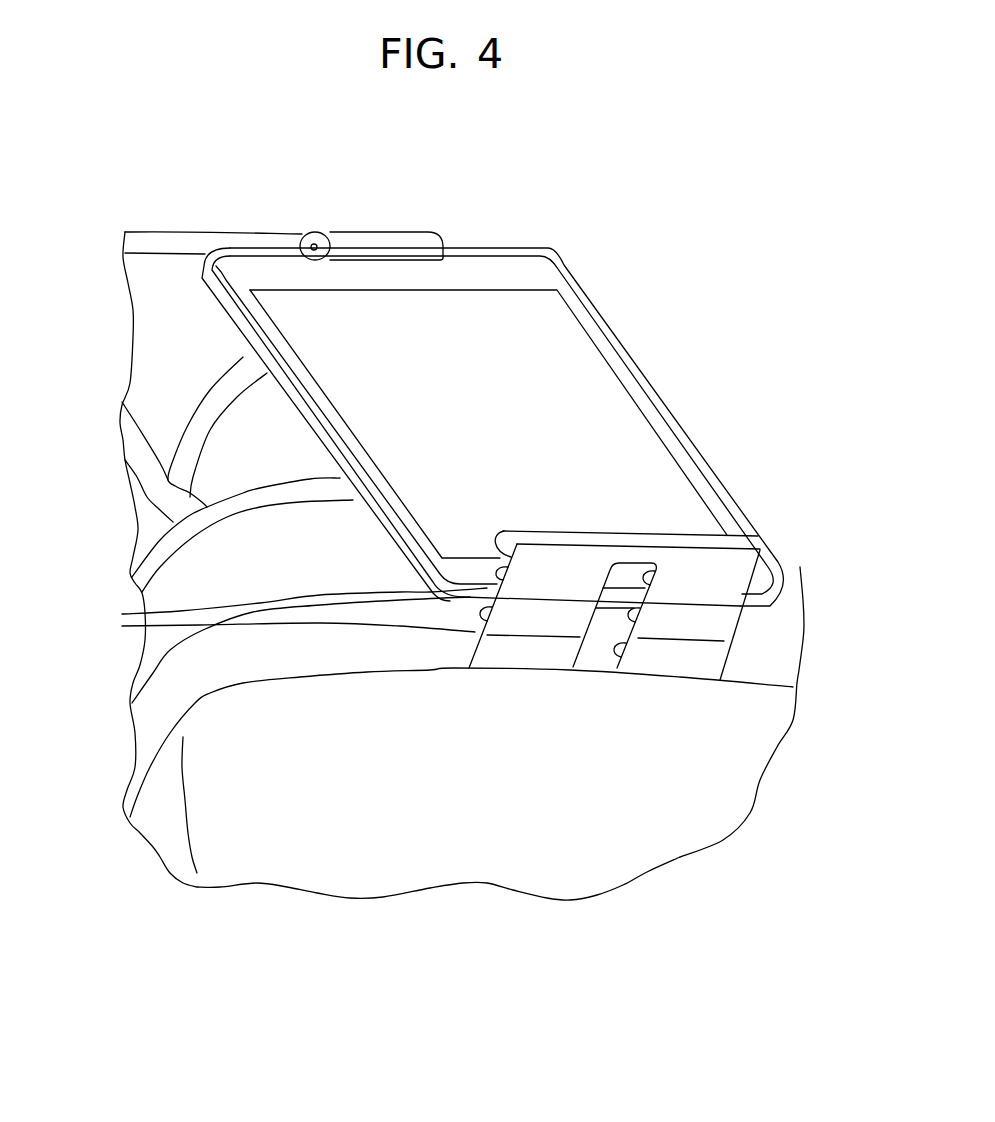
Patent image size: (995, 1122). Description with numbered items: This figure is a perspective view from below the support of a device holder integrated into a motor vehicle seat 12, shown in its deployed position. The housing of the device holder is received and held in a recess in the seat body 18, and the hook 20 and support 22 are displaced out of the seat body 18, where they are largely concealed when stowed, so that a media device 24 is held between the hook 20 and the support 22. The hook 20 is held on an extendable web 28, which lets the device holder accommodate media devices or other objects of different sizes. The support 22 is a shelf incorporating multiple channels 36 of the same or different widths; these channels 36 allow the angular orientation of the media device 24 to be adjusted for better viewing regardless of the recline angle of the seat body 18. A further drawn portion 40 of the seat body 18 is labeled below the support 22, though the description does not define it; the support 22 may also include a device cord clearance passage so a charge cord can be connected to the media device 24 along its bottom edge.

The motor vehicle seat 12 is at (175, 670).
The seat body 18 is at (223, 843).
The hook 20 is at (392, 242).
The support 22 is at (697, 540).
The media device 24 is at (597, 367).
The extendable web 28 is at (597, 645).
The channels 36 is at (493, 528).
The fold portion 40 is at (730, 737).